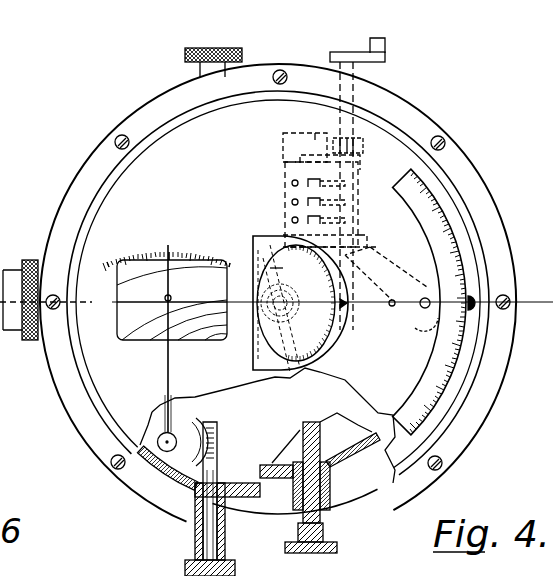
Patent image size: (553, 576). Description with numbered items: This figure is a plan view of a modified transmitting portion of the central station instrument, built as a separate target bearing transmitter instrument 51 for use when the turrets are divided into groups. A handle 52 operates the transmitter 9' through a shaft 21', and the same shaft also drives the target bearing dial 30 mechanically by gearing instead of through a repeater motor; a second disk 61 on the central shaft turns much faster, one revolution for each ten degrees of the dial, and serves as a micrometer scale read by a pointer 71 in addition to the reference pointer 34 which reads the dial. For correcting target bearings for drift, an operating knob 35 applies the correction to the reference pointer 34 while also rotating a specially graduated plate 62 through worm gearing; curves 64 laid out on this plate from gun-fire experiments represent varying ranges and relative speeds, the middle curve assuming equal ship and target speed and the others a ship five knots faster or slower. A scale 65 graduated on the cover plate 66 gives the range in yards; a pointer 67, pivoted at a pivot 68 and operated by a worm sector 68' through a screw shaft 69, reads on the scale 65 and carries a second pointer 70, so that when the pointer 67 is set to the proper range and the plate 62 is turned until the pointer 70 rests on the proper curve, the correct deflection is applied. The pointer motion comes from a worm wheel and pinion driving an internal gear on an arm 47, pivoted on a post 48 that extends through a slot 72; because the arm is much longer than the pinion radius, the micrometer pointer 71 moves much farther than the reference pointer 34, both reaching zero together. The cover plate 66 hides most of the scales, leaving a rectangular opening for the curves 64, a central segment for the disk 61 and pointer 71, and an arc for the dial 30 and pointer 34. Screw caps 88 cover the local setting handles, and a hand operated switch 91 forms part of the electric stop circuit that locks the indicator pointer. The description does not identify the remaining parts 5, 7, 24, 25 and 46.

The casing 5 is at (520, 304).
The knob shaft 7 is at (12, 300).
The transmitter 9' is at (332, 201).
The shaft 21' is at (363, 196).
The switch 24 is at (363, 145).
The contact 25 is at (322, 138).
The dial 30 is at (428, 330).
The reference pointer 34 is at (469, 296).
The operating knob 35 is at (185, 54).
The target angle dial 46 is at (282, 270).
The arm 47 is at (386, 273).
The post 48 is at (422, 306).
The instrument 51 is at (410, 110).
The handle 52 is at (385, 56).
The second disk 61 is at (313, 333).
The graduated plate 62 is at (135, 340).
The curves 64 is at (117, 302).
The scale 65 is at (207, 252).
The cover plate 66 is at (177, 283).
The pointer 67 is at (170, 365).
The pivot 68 is at (178, 427).
The worm sector 68' is at (211, 481).
The screw shaft 69 is at (218, 470).
The second pointer 70 is at (165, 300).
The pointer 71 is at (346, 305).
The slot 72 is at (418, 275).
The screw caps 88 is at (30, 340).
The hand operated switch 91 is at (323, 533).